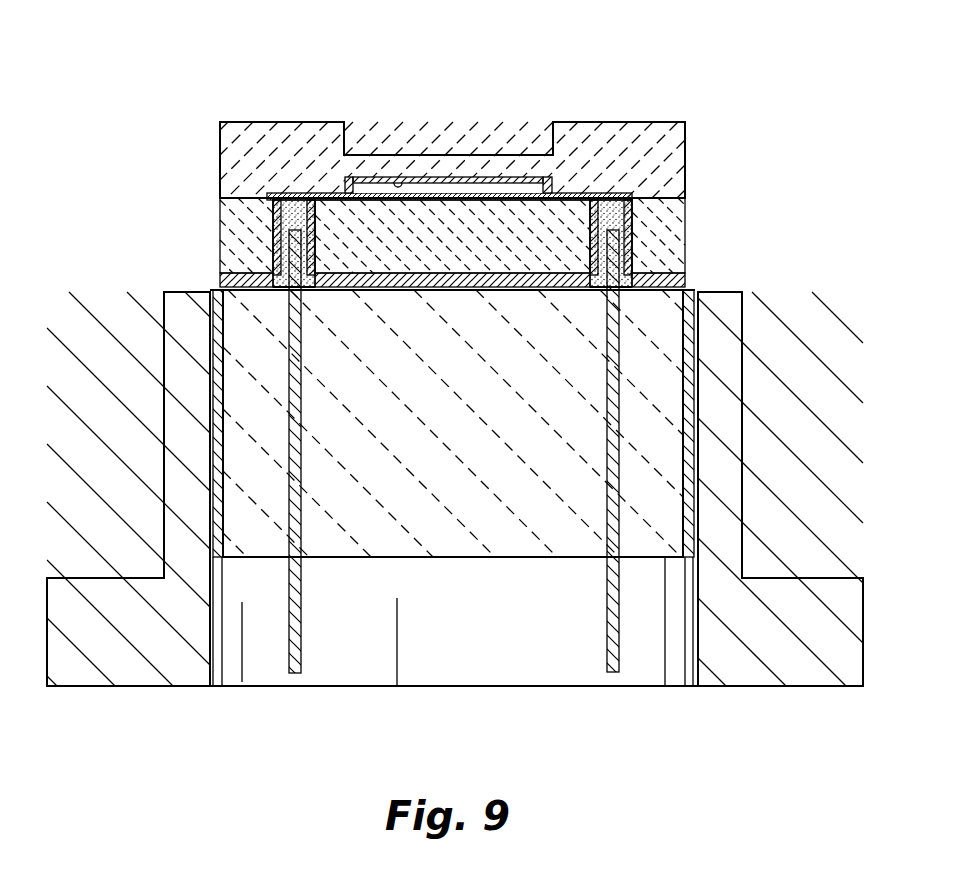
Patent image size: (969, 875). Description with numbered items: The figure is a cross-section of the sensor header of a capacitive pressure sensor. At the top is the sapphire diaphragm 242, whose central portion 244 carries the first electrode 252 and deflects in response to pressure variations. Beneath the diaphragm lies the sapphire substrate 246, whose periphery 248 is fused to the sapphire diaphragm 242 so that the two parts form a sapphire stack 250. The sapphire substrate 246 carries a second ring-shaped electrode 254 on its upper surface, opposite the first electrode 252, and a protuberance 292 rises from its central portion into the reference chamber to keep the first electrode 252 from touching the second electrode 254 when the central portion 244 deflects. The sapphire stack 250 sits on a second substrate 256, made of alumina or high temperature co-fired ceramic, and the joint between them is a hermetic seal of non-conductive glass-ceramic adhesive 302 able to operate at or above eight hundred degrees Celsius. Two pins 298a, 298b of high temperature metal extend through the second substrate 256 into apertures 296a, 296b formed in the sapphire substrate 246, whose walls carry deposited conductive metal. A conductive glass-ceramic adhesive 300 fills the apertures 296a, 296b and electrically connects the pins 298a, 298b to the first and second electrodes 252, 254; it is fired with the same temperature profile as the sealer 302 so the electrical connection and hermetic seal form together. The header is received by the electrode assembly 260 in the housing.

The sapphire diaphragm 242 is at (219, 152).
The central portion 244 is at (361, 156).
The sapphire substrate 246 is at (218, 242).
The periphery 248 is at (687, 226).
The sapphire stack 250 is at (446, 344).
The first electrode 252 is at (398, 183).
The second ring-shaped electrode 254 is at (510, 193).
The second substrate 256 is at (462, 437).
The electrode assembly 260 is at (772, 398).
The protuberance 292 is at (447, 193).
The aperture 296a is at (317, 246).
The aperture 296b is at (590, 252).
The pin 298a is at (301, 622).
The pin 298b is at (607, 623).
The conductive glass-ceramic adhesive 300 is at (310, 262).
The non-conductive glass-ceramic adhesive 302 is at (218, 279).